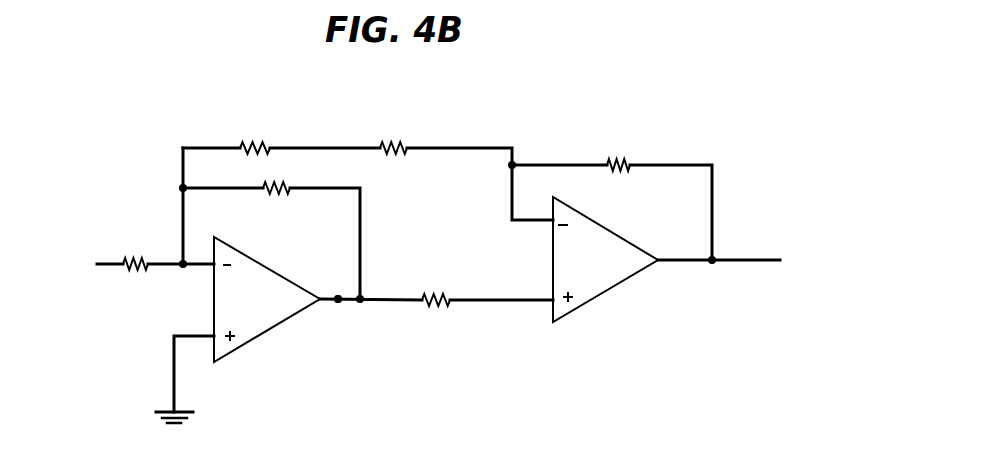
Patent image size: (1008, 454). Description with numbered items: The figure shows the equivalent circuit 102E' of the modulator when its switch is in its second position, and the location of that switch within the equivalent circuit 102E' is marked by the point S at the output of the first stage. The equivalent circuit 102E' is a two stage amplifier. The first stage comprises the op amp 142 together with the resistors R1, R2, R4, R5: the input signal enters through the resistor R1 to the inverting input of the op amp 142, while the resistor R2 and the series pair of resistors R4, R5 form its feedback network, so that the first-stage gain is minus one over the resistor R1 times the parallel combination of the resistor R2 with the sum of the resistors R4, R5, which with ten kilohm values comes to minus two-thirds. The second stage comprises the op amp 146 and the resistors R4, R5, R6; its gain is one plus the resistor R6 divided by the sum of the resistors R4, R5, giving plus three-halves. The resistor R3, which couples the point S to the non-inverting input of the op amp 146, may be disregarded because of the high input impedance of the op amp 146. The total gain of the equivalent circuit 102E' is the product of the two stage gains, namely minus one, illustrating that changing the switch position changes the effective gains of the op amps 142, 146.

The equivalent circuit 102E' is at (418, 257).
The resistor R1 is at (125, 262).
The resistor R2 is at (289, 182).
The resistor R3 is at (422, 298).
The resistor R4 is at (240, 147).
The resistor R5 is at (380, 147).
The resistor R6 is at (606, 163).
The op amp 142 is at (298, 318).
The op amp 146 is at (627, 280).
The point S is at (345, 310).